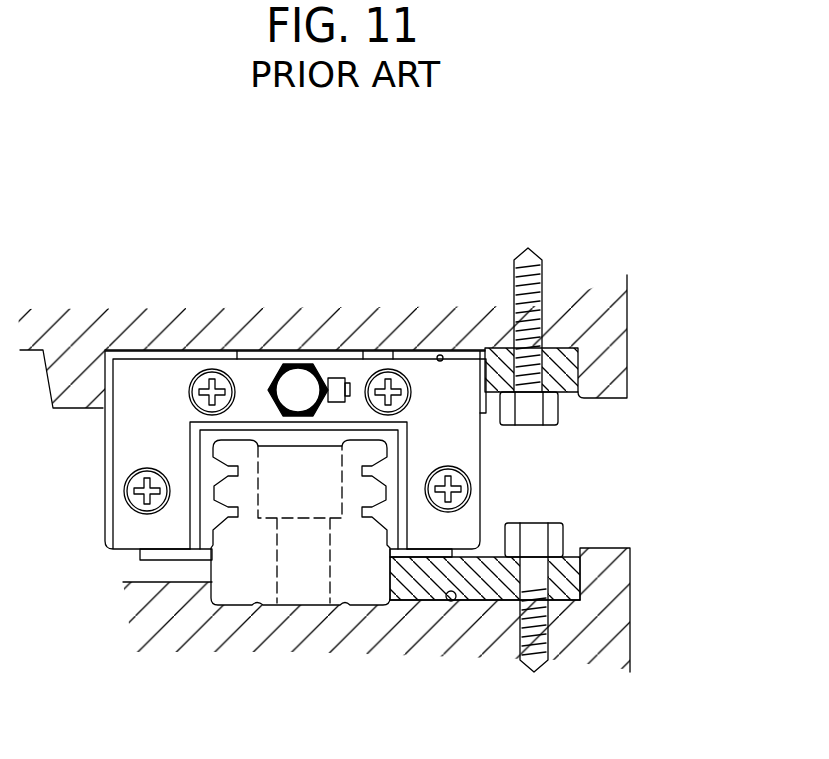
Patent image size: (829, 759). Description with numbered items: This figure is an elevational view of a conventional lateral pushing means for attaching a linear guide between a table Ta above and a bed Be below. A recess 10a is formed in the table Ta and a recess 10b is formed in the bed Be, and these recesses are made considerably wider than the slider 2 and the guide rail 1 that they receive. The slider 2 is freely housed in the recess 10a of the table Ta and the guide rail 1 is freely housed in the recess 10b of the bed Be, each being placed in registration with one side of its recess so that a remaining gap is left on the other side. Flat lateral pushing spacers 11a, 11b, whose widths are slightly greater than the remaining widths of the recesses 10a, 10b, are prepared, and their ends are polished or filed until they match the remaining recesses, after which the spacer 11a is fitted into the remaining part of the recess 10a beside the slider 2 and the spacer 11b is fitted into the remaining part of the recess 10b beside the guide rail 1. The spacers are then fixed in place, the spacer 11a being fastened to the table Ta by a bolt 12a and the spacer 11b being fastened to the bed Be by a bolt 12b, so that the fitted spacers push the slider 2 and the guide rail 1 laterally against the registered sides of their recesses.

The guide rail 1 is at (310, 562).
The slider 2 is at (482, 463).
The recess 10a is at (440, 356).
The recess 10b is at (456, 600).
The lateral pushing spacer 11a is at (573, 378).
The lateral pushing spacer 11b is at (570, 562).
The bolt 12a is at (546, 320).
The bolt 12b is at (548, 647).
The table Ta is at (268, 270).
The bed Be is at (340, 703).